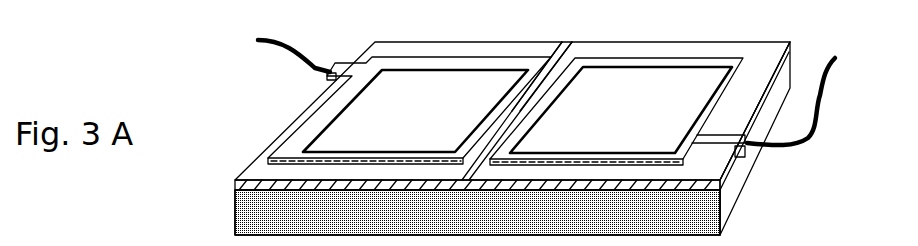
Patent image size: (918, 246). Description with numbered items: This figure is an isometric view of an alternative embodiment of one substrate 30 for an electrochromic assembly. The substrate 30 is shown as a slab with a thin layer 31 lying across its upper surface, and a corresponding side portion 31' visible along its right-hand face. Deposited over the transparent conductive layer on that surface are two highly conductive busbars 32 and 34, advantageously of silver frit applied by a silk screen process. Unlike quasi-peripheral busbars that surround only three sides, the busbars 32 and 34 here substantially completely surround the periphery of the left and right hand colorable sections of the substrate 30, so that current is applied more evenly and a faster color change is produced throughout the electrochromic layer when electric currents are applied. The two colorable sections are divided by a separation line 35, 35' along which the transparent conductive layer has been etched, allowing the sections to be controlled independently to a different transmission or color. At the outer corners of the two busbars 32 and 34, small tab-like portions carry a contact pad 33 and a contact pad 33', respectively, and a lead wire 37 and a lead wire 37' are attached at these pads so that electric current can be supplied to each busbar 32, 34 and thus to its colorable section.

The substrate 30 is at (234, 202).
The insulating layer 31 is at (445, 155).
The insulating layer (side portion) 31' is at (765, 142).
The busbar 32 is at (312, 127).
The contact pad 33 is at (330, 45).
The contact pad 33' is at (784, 172).
The busbar 34 is at (702, 112).
The separation line 35 is at (497, 137).
The separation line 35' is at (542, 60).
The lead wire 37 is at (274, 55).
The lead wire 37' is at (819, 101).